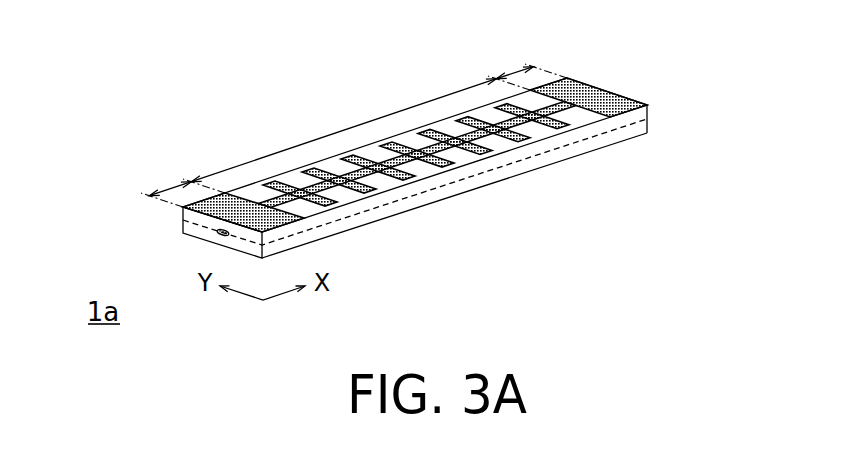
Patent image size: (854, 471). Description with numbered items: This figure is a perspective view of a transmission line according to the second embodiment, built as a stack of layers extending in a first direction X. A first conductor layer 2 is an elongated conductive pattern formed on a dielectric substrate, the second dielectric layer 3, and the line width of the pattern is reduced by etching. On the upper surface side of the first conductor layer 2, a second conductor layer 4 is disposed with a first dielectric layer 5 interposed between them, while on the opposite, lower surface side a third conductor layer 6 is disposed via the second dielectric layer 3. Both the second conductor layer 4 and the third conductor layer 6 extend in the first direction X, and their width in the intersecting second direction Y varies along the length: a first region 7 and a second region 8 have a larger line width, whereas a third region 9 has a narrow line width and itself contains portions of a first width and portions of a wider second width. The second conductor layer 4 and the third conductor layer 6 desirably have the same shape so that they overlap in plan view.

The first conductor layer 2 is at (221, 234).
The second dielectric layer 3 is at (648, 125).
The second conductor layer 4 is at (592, 82).
The first dielectric layer 5 is at (648, 108).
The third conductor layer 6 is at (625, 140).
The first region 7 is at (167, 190).
The second region 8 is at (516, 72).
The third region 9 is at (350, 128).